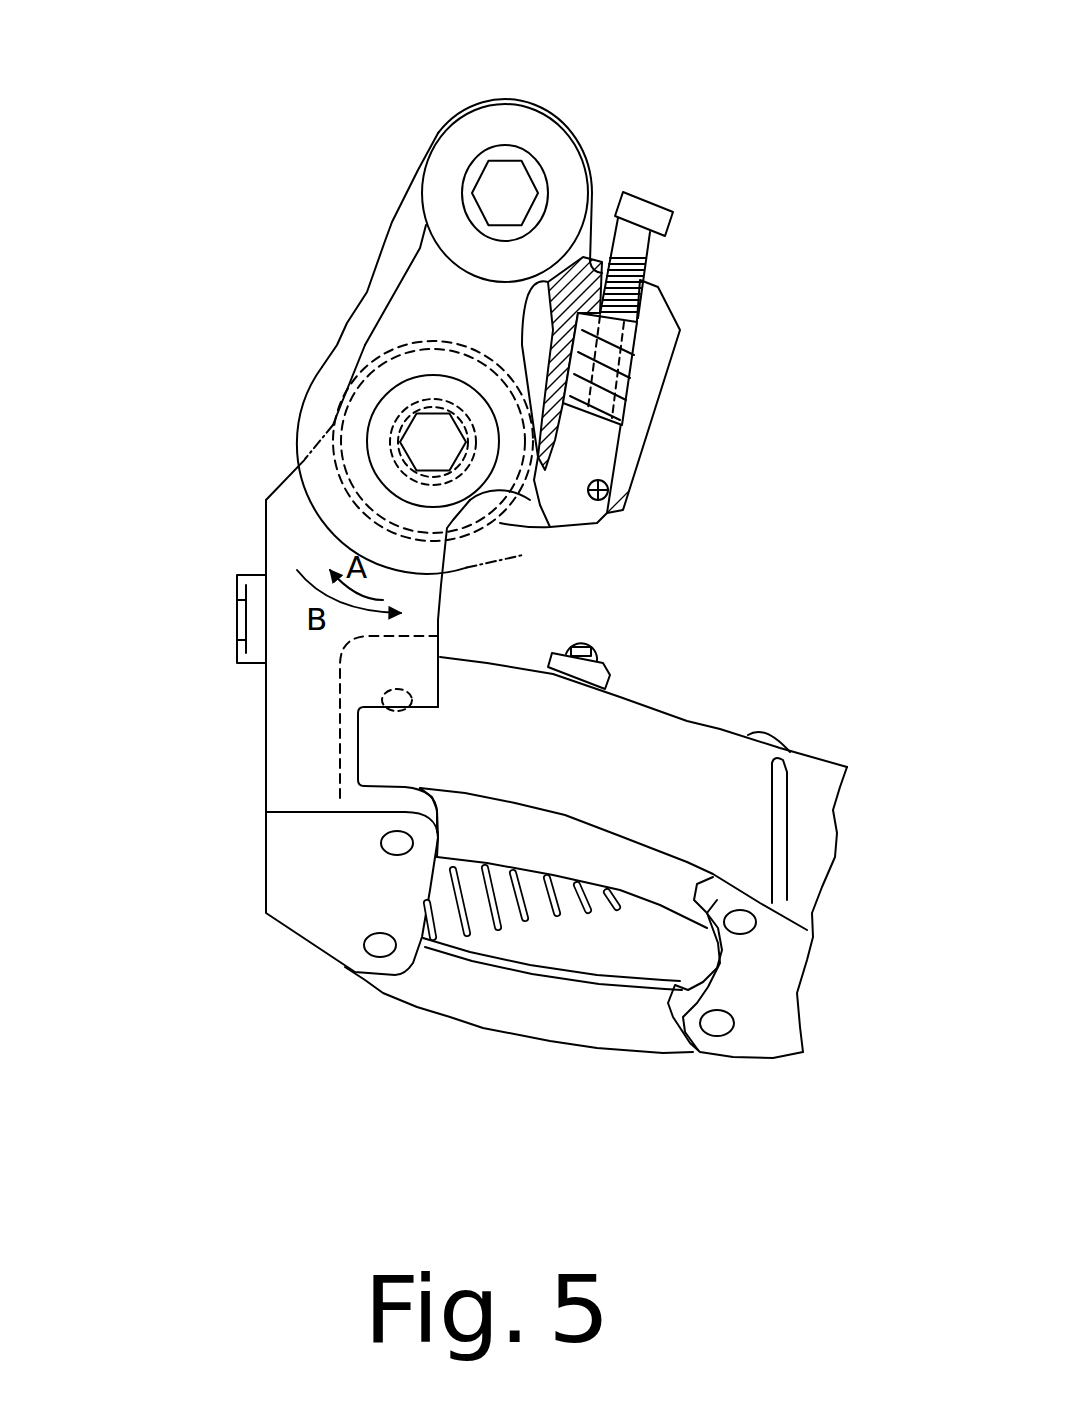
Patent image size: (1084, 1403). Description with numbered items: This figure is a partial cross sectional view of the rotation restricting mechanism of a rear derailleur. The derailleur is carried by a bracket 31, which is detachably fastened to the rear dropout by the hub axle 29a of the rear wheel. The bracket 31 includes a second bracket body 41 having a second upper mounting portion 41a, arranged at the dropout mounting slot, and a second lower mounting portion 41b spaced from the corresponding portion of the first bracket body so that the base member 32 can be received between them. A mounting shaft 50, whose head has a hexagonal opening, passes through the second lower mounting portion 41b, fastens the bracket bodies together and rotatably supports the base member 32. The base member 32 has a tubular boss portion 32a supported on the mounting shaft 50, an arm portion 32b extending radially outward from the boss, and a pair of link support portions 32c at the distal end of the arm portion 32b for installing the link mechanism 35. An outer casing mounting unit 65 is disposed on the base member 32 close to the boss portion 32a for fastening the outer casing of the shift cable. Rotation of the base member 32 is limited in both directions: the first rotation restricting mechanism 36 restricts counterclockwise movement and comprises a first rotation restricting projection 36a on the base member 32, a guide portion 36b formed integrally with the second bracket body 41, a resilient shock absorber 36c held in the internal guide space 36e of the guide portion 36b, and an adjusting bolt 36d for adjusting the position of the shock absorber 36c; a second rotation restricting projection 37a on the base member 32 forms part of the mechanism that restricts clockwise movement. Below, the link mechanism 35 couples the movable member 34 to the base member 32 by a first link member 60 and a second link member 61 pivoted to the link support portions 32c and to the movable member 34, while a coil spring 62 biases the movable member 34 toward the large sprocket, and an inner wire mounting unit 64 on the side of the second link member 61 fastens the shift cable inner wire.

The hub axle 29a is at (537, 130).
The bracket 31 is at (380, 268).
The second bracket body 41 is at (294, 277).
The second upper mounting portion 41a is at (413, 203).
The second lower mounting portion 41b is at (323, 410).
The mounting shaft 50 is at (330, 432).
The base member 32 is at (240, 512).
The tubular boss portion 32a is at (356, 415).
The arm portion 32b is at (307, 677).
The link support portions 32c is at (309, 929).
The outer casing mounting unit 65 is at (237, 603).
The first rotation restricting mechanism 36 is at (627, 514).
The first rotation restricting projection 36a is at (548, 512).
The guide portion 36b is at (670, 397).
The resilient shock absorber 36c is at (677, 313).
The adjusting bolt 36d is at (640, 243).
The guide space 36e is at (637, 455).
The second rotation restricting projection 37a is at (604, 507).
The first link member 60 is at (613, 715).
The second link member 61 is at (520, 1015).
The coil spring 62 is at (492, 885).
The inner wire mounting unit 64 is at (592, 642).
The link mechanism 35 is at (697, 760).
The movable member 34 is at (813, 781).